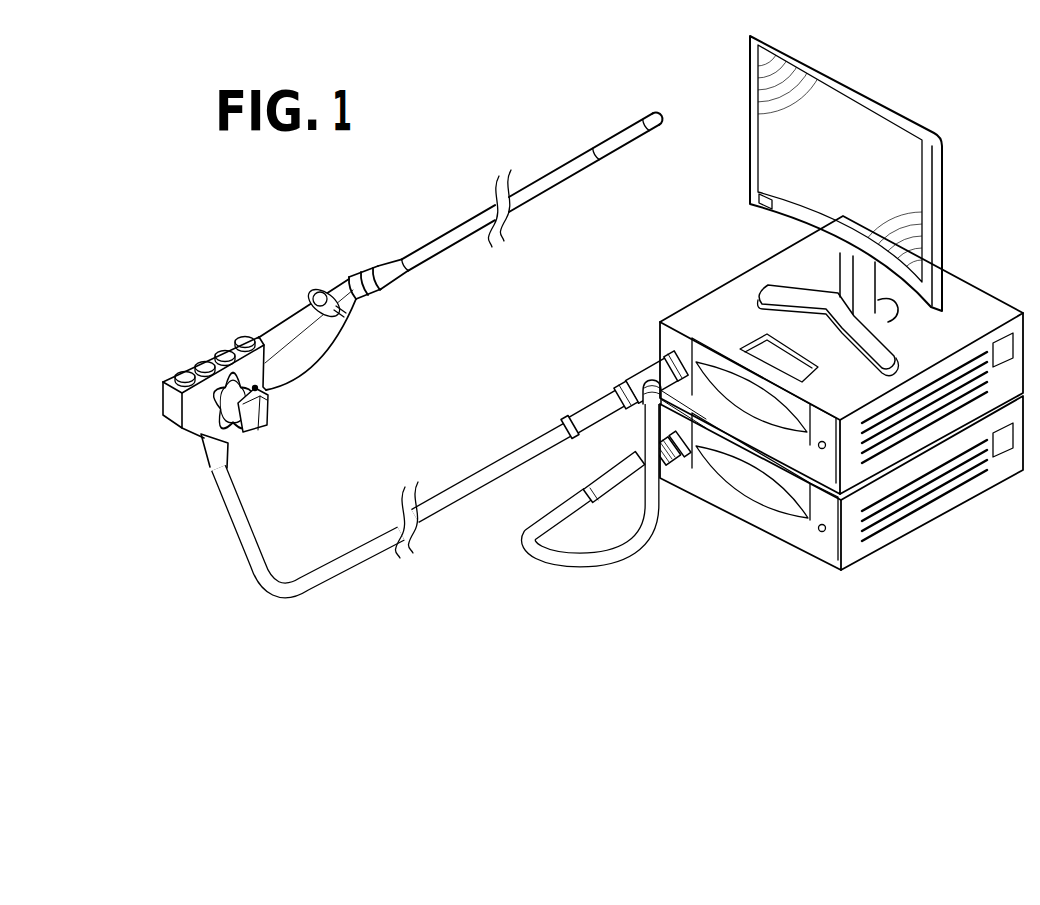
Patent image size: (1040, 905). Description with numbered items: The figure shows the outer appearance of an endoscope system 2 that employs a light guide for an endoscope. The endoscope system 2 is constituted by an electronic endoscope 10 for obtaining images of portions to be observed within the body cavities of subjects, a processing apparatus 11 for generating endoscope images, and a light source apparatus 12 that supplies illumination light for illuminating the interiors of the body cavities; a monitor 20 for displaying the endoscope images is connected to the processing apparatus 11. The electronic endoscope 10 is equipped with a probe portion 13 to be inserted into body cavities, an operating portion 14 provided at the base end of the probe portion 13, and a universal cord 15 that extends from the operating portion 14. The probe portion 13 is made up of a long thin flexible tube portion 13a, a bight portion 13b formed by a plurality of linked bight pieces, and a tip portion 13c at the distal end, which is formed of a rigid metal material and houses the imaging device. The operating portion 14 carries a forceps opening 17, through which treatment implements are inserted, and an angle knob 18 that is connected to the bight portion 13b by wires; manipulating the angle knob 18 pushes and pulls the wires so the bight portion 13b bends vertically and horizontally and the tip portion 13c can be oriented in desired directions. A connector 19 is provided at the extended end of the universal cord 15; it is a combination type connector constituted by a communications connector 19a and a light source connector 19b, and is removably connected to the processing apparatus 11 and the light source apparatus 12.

The endoscope system 2 is at (593, 333).
The electronic endoscope 10 is at (434, 326).
The processing apparatus 11 is at (808, 538).
The light source apparatus 12 is at (725, 300).
The probe portion 13 is at (542, 167).
The flexible tube portion 13a is at (552, 168).
The bight portion 13b is at (618, 128).
The tip portion 13c is at (643, 112).
The operating portion 14 is at (285, 363).
The universal cord 15 is at (238, 517).
The forceps opening 17 is at (308, 290).
The angle knob 18 is at (267, 418).
The connector 19 is at (591, 455).
The communications connector 19a is at (613, 477).
The light source connector 19b is at (597, 405).
The monitor 20 is at (895, 110).